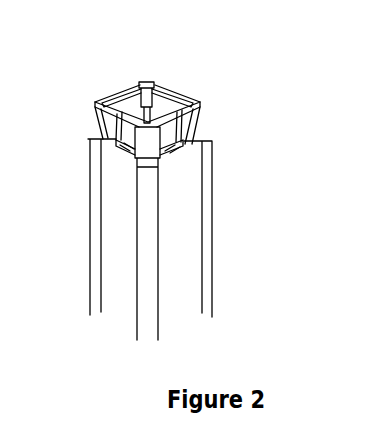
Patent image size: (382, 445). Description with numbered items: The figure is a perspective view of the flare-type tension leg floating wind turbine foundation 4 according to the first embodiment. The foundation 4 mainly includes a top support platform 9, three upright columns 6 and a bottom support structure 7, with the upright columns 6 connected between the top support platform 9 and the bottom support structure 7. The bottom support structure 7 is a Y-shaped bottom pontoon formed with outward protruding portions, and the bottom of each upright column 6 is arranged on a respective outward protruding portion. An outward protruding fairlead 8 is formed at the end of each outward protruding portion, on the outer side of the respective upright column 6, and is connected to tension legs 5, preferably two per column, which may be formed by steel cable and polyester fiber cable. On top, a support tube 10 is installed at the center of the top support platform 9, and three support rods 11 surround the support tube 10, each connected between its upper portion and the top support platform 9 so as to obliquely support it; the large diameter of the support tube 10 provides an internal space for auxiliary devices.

The flare-type tension leg floating wind turbine foundation 4 is at (205, 114).
The tension leg 5 is at (212, 230).
The upright column 6 is at (195, 123).
The bottom support structure 7 is at (175, 143).
The outward protruding fairlead 8 is at (93, 135).
The top support platform 9 is at (198, 107).
The support tube 10 is at (153, 82).
The support rod 11 is at (128, 90).